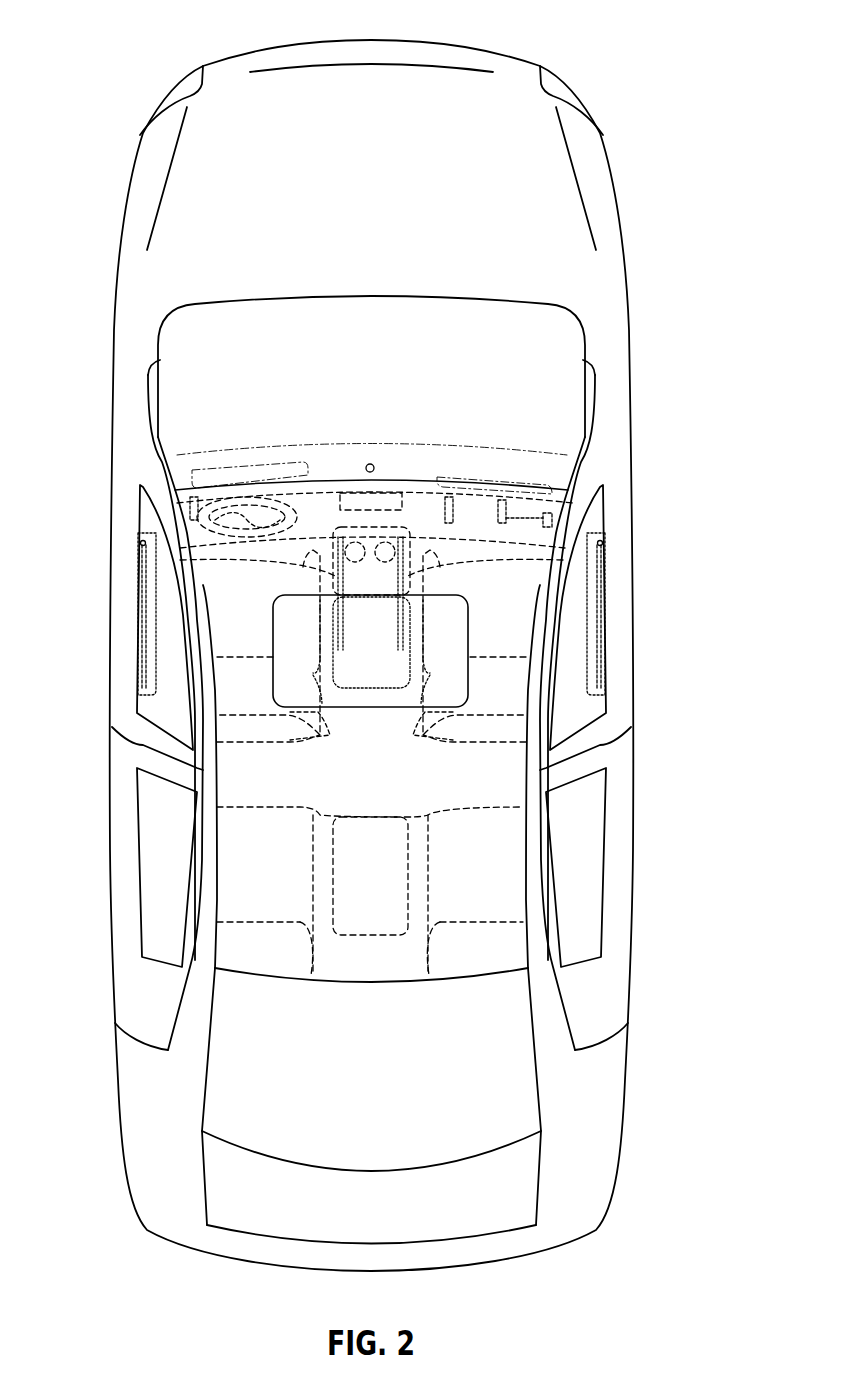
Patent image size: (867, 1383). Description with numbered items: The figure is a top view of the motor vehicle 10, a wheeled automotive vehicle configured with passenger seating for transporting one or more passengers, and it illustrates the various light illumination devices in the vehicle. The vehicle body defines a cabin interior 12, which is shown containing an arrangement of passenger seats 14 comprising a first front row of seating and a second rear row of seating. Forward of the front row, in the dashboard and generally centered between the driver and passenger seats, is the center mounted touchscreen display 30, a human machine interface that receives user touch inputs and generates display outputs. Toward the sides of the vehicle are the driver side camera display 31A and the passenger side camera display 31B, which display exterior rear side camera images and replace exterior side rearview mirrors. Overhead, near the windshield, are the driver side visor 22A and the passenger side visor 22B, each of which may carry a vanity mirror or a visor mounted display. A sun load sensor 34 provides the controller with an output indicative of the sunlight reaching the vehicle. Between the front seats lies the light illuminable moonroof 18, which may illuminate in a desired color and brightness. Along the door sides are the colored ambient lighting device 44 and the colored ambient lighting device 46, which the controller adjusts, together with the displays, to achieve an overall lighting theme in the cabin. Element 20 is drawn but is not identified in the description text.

The motor vehicle 10 is at (132, 67).
The cabin interior 12 is at (273, 777).
The passenger seats 14 is at (230, 620).
The moonroof 18 is at (468, 682).
The roof 20 is at (209, 415).
The driver side visor 22A is at (190, 468).
The passenger side visor 22B is at (550, 476).
The center mounted touchscreen display 30 is at (380, 500).
The driver side camera display 31A is at (147, 507).
The passenger side camera display 31B is at (595, 507).
The sun load sensor 34 is at (374, 466).
The colored ambient lighting device 44 is at (235, 548).
The colored ambient lighting device 46 is at (508, 548).